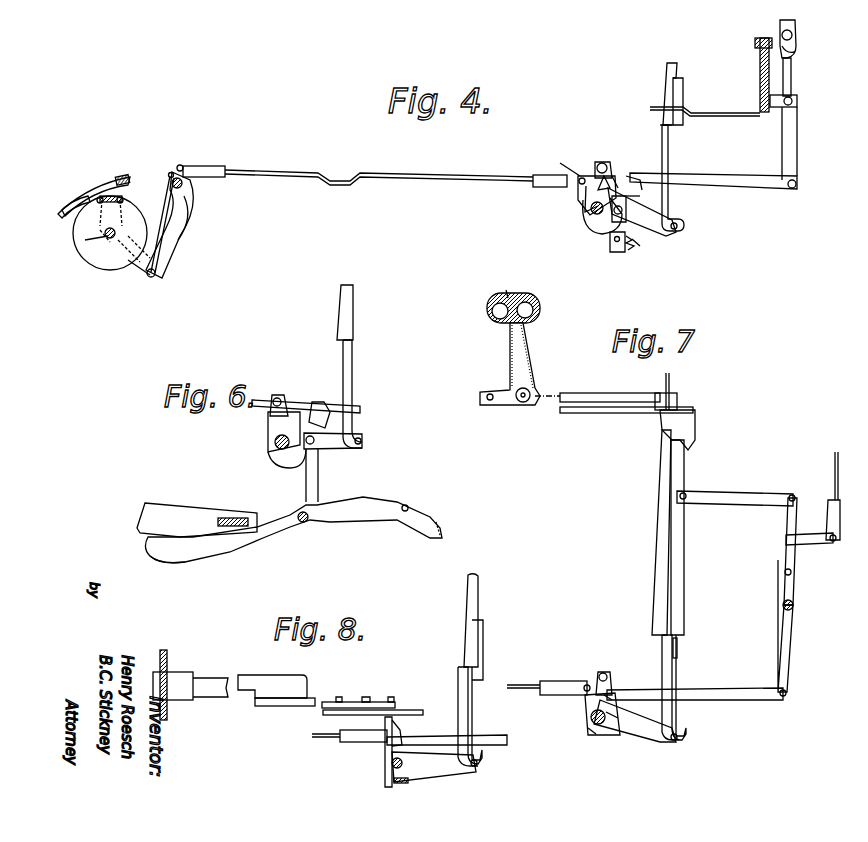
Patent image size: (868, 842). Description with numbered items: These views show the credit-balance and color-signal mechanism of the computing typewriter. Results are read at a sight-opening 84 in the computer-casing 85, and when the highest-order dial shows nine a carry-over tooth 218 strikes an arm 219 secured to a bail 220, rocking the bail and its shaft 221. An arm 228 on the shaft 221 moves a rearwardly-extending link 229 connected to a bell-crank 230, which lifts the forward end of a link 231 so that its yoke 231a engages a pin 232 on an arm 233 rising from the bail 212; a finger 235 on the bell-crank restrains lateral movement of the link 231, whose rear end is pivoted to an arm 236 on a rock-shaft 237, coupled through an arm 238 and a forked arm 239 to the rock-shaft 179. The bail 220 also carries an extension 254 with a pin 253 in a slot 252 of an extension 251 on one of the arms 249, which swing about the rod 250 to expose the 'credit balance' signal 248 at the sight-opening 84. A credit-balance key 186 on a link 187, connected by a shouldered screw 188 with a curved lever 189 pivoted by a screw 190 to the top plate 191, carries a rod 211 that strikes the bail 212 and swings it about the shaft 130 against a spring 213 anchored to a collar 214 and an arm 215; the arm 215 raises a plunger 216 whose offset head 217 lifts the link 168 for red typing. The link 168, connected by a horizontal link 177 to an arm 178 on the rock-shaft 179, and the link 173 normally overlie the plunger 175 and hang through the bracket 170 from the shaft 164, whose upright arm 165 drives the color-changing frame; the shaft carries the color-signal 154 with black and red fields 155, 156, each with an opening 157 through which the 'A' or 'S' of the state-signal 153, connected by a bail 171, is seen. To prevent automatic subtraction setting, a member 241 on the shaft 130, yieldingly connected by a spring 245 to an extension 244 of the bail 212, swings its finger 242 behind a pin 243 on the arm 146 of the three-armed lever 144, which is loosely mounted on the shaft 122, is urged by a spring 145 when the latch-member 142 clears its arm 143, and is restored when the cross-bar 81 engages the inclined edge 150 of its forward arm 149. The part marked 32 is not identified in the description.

In FIG. 4, the dial 32 is at (100, 268).
In FIG. 6, the cross-bar 81 is at (233, 518).
In FIG. 4, the sight-opening 84 is at (104, 186).
In FIG. 4, the computer-casing 85 is at (66, 208).
In FIG. 8, the computer-casing 85 is at (166, 652).
In FIG. 6, the transverse shaft 122 is at (306, 522).
In FIG. 4, the shaft 130 is at (590, 210).
In FIG. 8, the shaft 130 is at (403, 764).
In FIG. 6, the latch-member 142 is at (444, 532).
In FIG. 6, the rearwardly-extending arm 143 is at (425, 512).
In FIG. 6, the three-armed lever 144 is at (290, 532).
In FIG. 4, the spring 145 is at (636, 248).
In FIG. 4, the upwardly-extending arm 146 is at (616, 254).
In FIG. 6, the upwardly-extending arm 146 is at (318, 478).
In FIG. 6, the forwardly-extending arm 149 is at (172, 562).
In FIG. 6, the inclined edge 150 is at (190, 512).
In FIG. 7, the state-signal 153 is at (530, 350).
In FIG. 7, the color-signal 154 is at (512, 285).
In FIG. 7, the black color field 155 is at (534, 308).
In FIG. 7, the red color field 156 is at (492, 310).
In FIG. 7, the opening 157 is at (494, 324).
In FIG. 7, the rearwardly-extending shaft 164 is at (600, 388).
In FIG. 7, the upright arm 165 is at (670, 378).
In FIG. 4, the pendant link 168 is at (664, 82).
In FIG. 6, the pendant link 168 is at (340, 316).
In FIG. 7, the pendant link 168 is at (657, 552).
In FIG. 8, the pendant link 168 is at (466, 612).
In FIG. 4, the bracket 170 is at (700, 116).
In FIG. 7, the bail 171 is at (620, 414).
In FIG. 4, the link 173 is at (684, 94).
In FIG. 7, the link 173 is at (685, 576).
In FIG. 8, the link 173 is at (484, 640).
In FIG. 7, the plunger 175 is at (678, 648).
In FIG. 7, the horizontal link 177 is at (768, 494).
In FIG. 4, the arm 178 is at (797, 30).
In FIG. 4, the rock-shaft 179 is at (764, 40).
In FIG. 8, the credit-balance key 186 is at (192, 666).
In FIG. 8, the link 187 is at (270, 675).
In FIG. 8, the shouldered screw 188 is at (392, 693).
In FIG. 8, the curved lever 189 is at (338, 697).
In FIG. 8, the shouldered screw 190 is at (366, 697).
In FIG. 8, the top plate 191 is at (328, 716).
In FIG. 8, the downwardly-extending rod 211 is at (386, 780).
In FIG. 6, the bail 212 is at (272, 452).
In FIG. 7, the bail 212 is at (597, 728).
In FIG. 8, the bail 212 is at (400, 784).
In FIG. 7, the spring 213 is at (612, 716).
In FIG. 7, the collar 214 is at (586, 728).
In FIG. 4, the arm 215 is at (665, 236).
In FIG. 6, the arm 215 is at (352, 450).
In FIG. 7, the arm 215 is at (640, 744).
In FIG. 4, the plunger 216 is at (669, 156).
In FIG. 6, the plunger 216 is at (353, 366).
In FIG. 7, the plunger 216 is at (673, 677).
In FIG. 8, the plunger 216 is at (458, 688).
In FIG. 4, the laterally-offset head 217 is at (663, 130).
In FIG. 4, the carry-over tooth 218 is at (161, 224).
In FIG. 4, the arm 219 is at (186, 205).
In FIG. 4, the bail 220 is at (168, 175).
In FIG. 4, the shaft 221 is at (179, 166).
In FIG. 4, the arm 228 is at (184, 185).
In FIG. 4, the rearwardly-extending link 229 is at (286, 173).
In FIG. 7, the rearwardly-extending link 229 is at (552, 681).
In FIG. 8, the rearwardly-extending link 229 is at (326, 738).
In FIG. 4, the bell-crank 230 is at (580, 188).
In FIG. 6, the bell-crank 230 is at (315, 404).
In FIG. 7, the bell-crank 230 is at (584, 705).
In FIG. 8, the bell-crank 230 is at (428, 745).
In FIG. 4, the link 231 is at (752, 170).
In FIG. 6, the link 231 is at (372, 408).
In FIG. 7, the link 231 is at (714, 702).
In FIG. 8, the link 231 is at (494, 746).
In FIG. 4, the yoke 231a is at (600, 163).
In FIG. 7, the yoke 231a is at (602, 672).
In FIG. 4, the pin 232 is at (604, 162).
In FIG. 7, the pin 232 is at (610, 680).
In FIG. 4, the arm 233 is at (615, 176).
In FIG. 6, the arm 233 is at (278, 398).
In FIG. 4, the finger 235 is at (633, 174).
In FIG. 4, the arm 236 is at (789, 134).
In FIG. 4, the rock-shaft 237 is at (799, 101).
In FIG. 7, the rock-shaft 237 is at (782, 605).
In FIG. 4, the upwardly-extending arm 238 is at (792, 74).
In FIG. 4, the arm 239 is at (796, 48).
In FIG. 4, the member 241 is at (604, 233).
In FIG. 6, the member 241 is at (288, 470).
In FIG. 4, the finger 242 is at (628, 198).
In FIG. 4, the pin 243 is at (624, 212).
In FIG. 6, the pin 243 is at (315, 441).
In FIG. 4, the upward extension 244 is at (582, 204).
In FIG. 6, the upward extension 244 is at (268, 426).
In FIG. 4, the spring 245 is at (558, 166).
In FIG. 4, the signal 248 is at (125, 194).
In FIG. 4, the arms 249 is at (110, 238).
In FIG. 4, the rod 250 is at (86, 242).
In FIG. 4, the extension 251 is at (140, 268).
In FIG. 4, the slot 252 is at (150, 256).
In FIG. 4, the pin 253 is at (156, 272).
In FIG. 4, the extension 254 is at (184, 228).